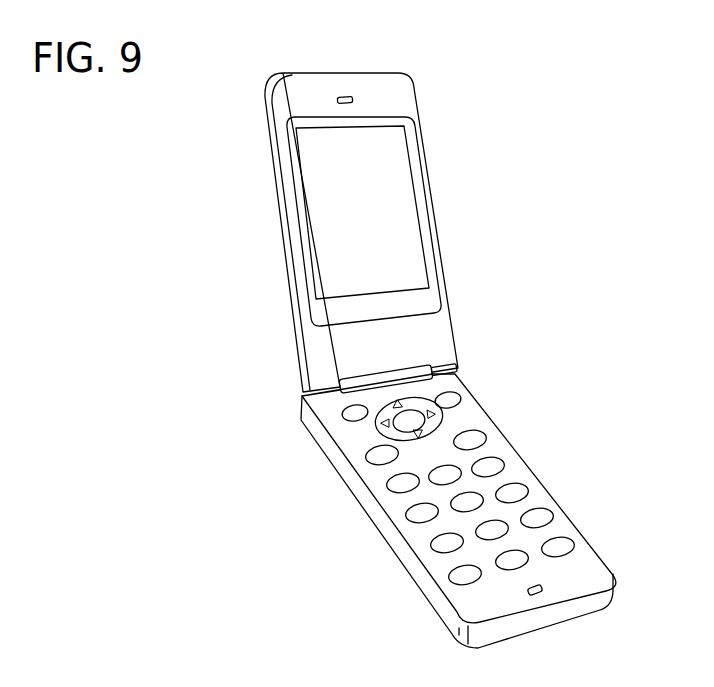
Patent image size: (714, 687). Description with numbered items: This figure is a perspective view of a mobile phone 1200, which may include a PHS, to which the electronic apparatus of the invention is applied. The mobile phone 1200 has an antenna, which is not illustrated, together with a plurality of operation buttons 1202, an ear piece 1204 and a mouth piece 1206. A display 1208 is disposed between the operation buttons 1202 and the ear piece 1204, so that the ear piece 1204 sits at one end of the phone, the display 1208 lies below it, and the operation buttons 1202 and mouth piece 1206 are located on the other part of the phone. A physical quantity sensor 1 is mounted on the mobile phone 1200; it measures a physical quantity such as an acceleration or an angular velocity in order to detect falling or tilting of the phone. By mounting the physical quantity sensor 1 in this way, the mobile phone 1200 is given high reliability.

The mobile phone 1200 is at (484, 94).
The ear piece 1204 is at (345, 96).
The display 1208 is at (390, 208).
The operation buttons 1202 is at (522, 489).
The mouth piece 1206 is at (543, 594).
The physical quantity sensor 1 is at (465, 420).